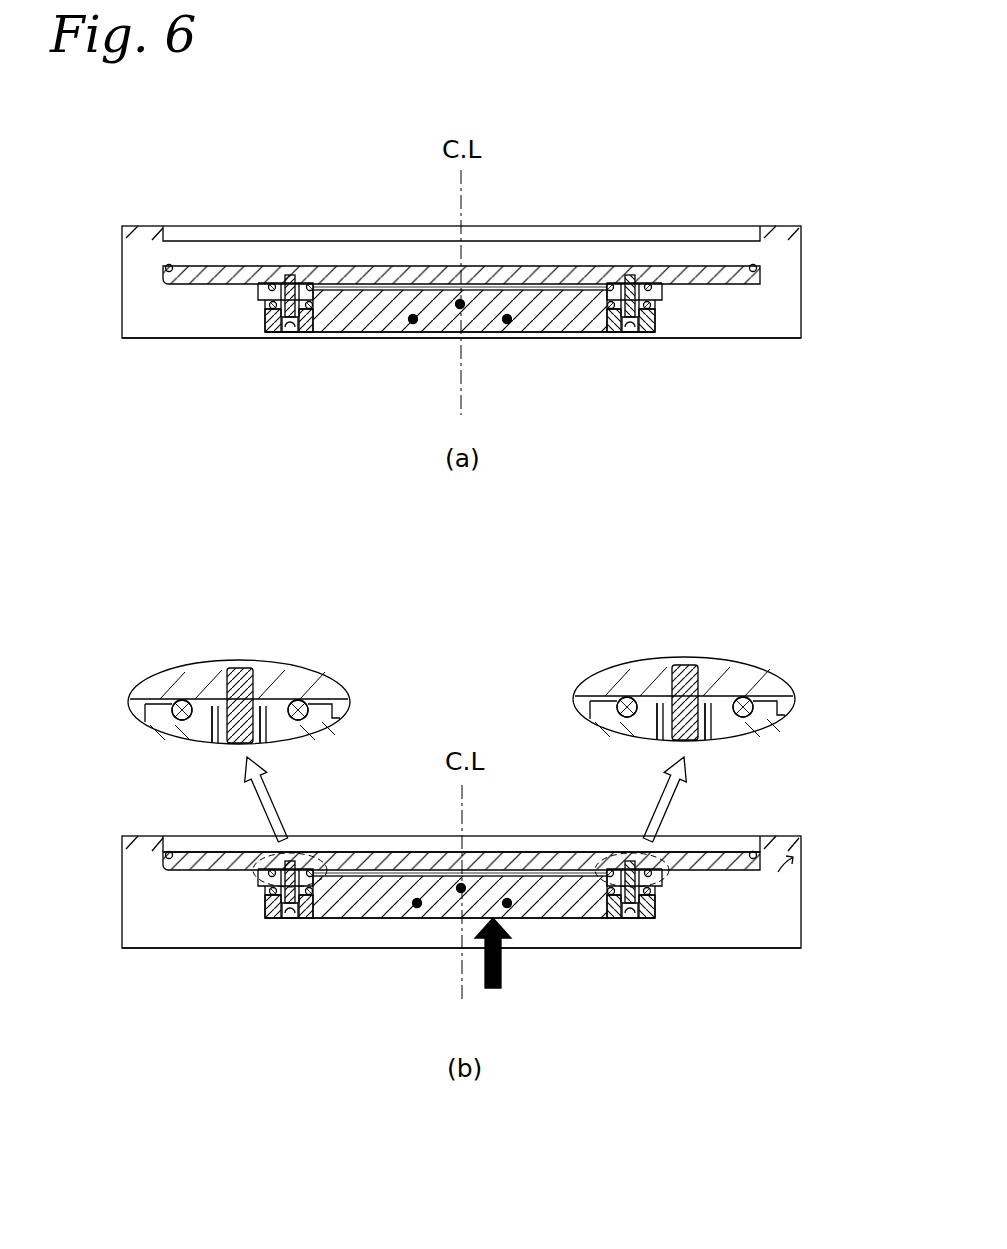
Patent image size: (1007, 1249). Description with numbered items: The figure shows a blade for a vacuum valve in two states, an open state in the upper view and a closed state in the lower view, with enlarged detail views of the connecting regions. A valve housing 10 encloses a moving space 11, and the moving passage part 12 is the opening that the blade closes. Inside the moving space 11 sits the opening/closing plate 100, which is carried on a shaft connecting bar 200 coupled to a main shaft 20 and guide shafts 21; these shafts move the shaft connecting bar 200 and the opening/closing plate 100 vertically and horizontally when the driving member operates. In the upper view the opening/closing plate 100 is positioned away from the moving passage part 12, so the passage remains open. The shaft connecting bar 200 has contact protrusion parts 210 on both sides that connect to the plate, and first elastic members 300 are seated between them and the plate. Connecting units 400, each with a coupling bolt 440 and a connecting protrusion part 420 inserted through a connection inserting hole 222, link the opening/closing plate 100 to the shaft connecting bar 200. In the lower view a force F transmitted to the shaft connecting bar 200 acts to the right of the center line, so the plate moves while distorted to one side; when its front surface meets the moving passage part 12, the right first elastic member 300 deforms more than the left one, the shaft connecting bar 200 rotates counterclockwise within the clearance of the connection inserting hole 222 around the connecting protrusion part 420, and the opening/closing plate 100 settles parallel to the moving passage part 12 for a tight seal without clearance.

The valve housing 10 is at (142, 227).
The moving space 11 is at (787, 293).
The moving passage part 12 is at (282, 228).
The opening/closing plate 100 is at (673, 277).
The shaft connecting bar 200 is at (542, 312).
The main shaft 20 is at (443, 332).
The guide shafts 21 is at (413, 322).
The connecting unit 400 is at (265, 332).
The first elastic member 300 is at (175, 702).
The coupling bolt 440 is at (255, 680).
The connecting protrusion part 420 is at (265, 697).
The contact protrusion part 210 is at (187, 735).
The connection inserting hole 222 is at (268, 728).
The force F is at (493, 973).